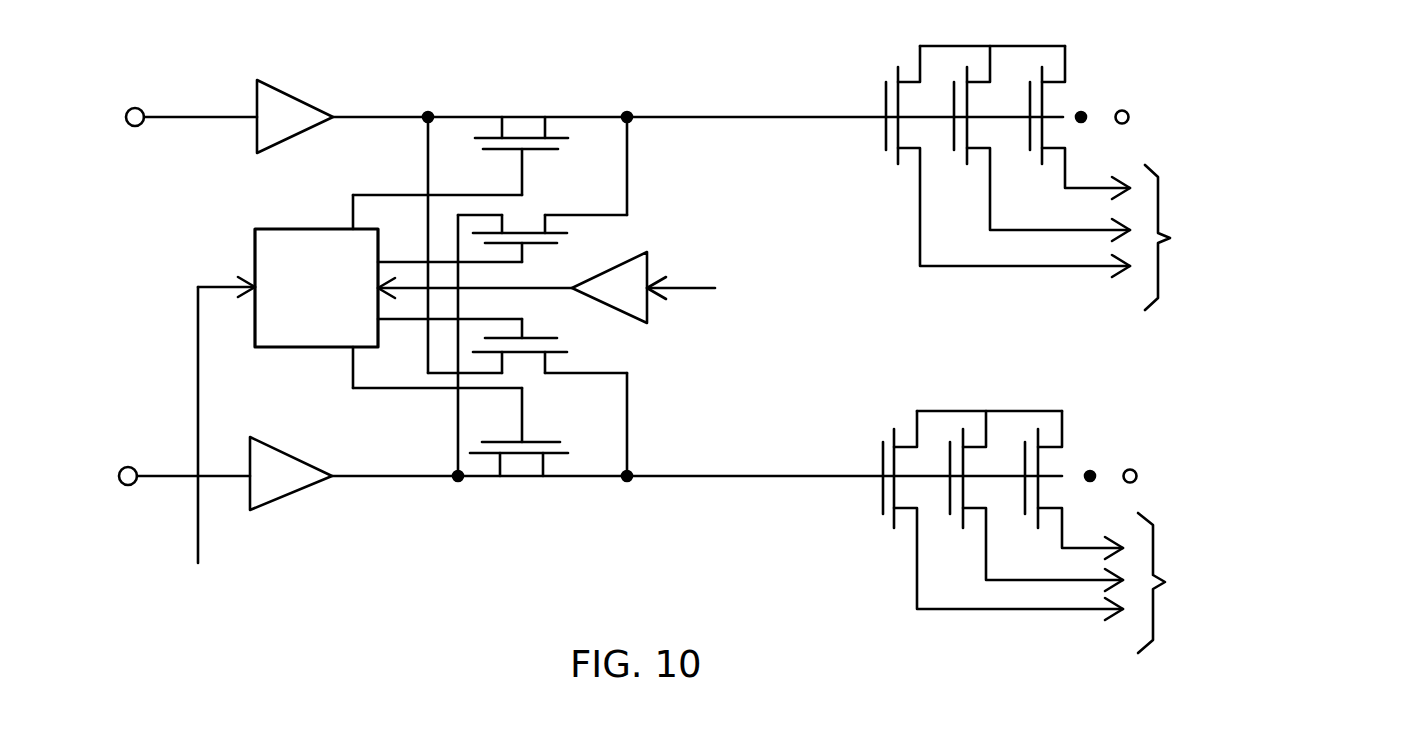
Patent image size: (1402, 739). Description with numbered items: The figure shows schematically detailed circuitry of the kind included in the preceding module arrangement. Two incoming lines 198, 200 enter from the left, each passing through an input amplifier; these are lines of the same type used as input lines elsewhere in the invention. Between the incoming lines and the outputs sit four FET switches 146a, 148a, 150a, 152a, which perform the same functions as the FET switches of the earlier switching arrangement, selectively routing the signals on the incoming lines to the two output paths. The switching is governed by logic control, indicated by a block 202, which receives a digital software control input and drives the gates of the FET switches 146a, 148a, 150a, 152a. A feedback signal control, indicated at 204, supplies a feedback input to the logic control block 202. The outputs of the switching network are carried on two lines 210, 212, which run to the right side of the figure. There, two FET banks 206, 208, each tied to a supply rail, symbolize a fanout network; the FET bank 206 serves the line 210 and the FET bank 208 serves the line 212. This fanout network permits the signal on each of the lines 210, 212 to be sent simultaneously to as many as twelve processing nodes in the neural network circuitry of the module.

The incoming line 198 is at (255, 92).
The incoming line 200 is at (170, 476).
The logic control block 202 is at (253, 248).
The feedback signal control 204 is at (647, 258).
The FET bank 206 is at (1118, 90).
The FET bank 208 is at (1115, 452).
The line 210 is at (731, 117).
The line 212 is at (824, 478).
The FET switch 146a is at (528, 112).
The FET switch 148a is at (582, 240).
The FET switch 150a is at (581, 343).
The FET switch 152a is at (517, 478).